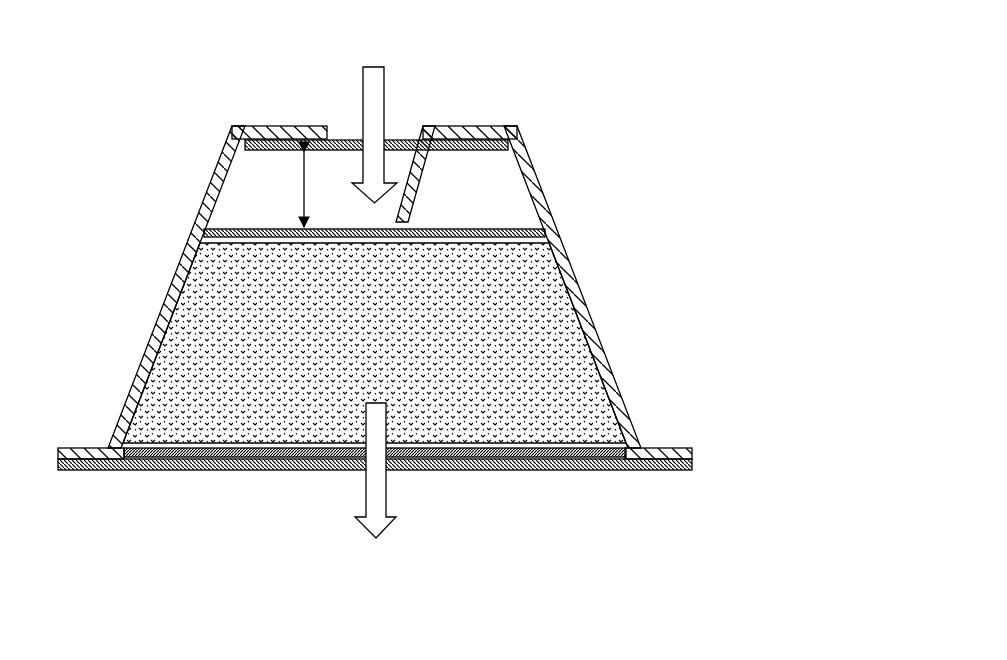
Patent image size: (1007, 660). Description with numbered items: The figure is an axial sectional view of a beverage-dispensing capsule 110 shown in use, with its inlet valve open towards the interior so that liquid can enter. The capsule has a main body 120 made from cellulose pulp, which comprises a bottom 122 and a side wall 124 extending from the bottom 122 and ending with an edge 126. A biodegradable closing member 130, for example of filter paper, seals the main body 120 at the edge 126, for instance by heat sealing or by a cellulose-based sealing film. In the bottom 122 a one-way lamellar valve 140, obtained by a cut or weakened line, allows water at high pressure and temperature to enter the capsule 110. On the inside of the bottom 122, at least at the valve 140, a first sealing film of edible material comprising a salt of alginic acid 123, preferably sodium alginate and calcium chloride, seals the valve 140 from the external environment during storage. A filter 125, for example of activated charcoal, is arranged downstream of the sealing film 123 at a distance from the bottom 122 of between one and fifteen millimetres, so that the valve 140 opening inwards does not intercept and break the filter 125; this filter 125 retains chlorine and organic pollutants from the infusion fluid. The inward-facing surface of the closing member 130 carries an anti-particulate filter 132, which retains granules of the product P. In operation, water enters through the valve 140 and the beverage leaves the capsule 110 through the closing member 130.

The capsule 110 is at (581, 86).
The main body 120 is at (612, 359).
The bottom 122 is at (265, 126).
The first sealing film made from edible material comprising at least one salt of alg 123 is at (347, 140).
The side wall 124 is at (181, 263).
The filter 125 is at (237, 228).
The edge 126 is at (97, 447).
The closing member 130 is at (256, 472).
The anti-particulate filter 132 is at (500, 455).
The one-way lamellar valve 140 is at (425, 188).
The product P is at (237, 280).